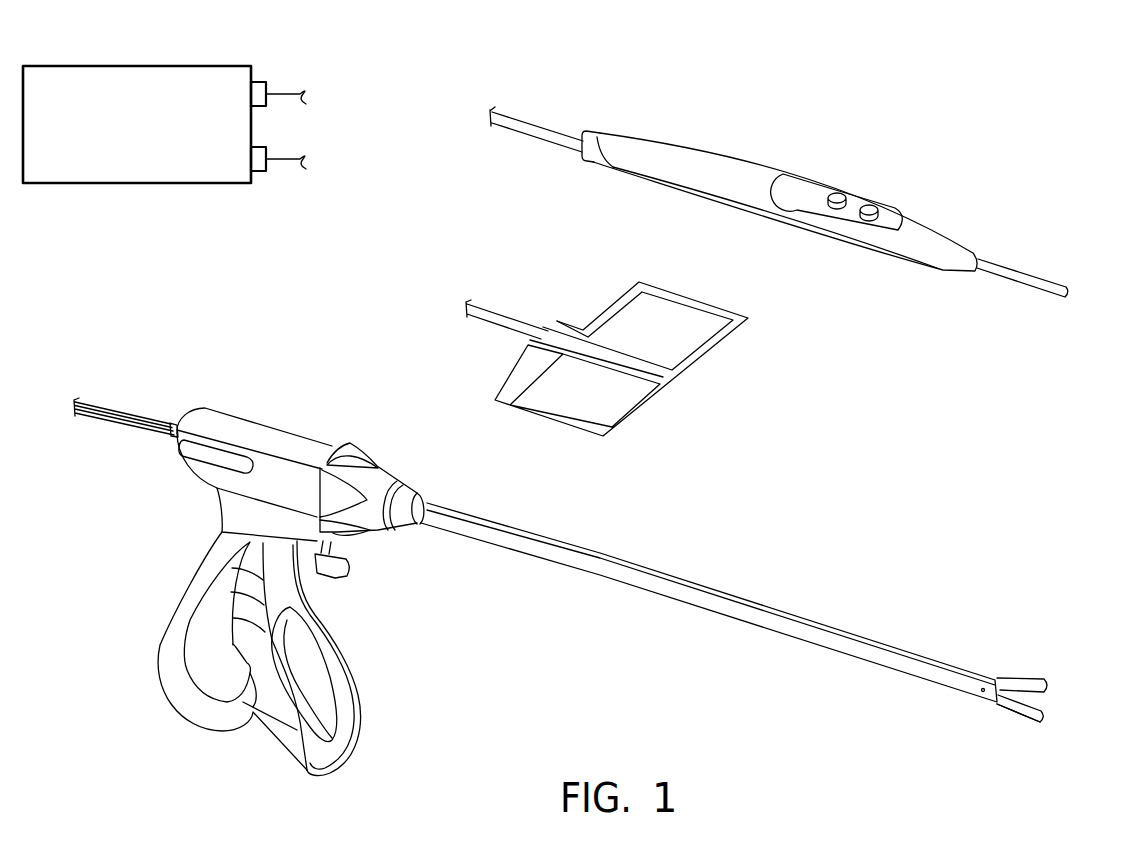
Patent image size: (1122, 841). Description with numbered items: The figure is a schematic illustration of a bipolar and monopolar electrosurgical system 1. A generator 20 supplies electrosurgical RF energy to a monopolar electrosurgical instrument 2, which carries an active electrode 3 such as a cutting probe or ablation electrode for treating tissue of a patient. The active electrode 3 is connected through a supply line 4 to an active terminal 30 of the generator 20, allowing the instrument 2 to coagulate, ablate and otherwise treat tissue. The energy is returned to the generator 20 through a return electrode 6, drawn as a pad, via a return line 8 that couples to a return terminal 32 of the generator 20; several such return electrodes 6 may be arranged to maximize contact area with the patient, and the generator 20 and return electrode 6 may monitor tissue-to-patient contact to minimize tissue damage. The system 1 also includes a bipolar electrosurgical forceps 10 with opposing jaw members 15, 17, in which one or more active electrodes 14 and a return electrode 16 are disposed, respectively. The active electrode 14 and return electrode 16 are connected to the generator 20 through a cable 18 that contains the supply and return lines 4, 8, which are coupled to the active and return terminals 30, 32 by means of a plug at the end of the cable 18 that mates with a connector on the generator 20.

The electrosurgical system 1 is at (571, 245).
The monopolar electrosurgical instrument 2 is at (922, 228).
The active electrode 3 is at (1048, 282).
The supply line 4 is at (539, 120).
The return electrode 6 is at (547, 428).
The return line 8 is at (512, 318).
The bipolar electrosurgical forceps 10 is at (613, 570).
The active electrode 14 is at (1047, 695).
The jaw member 15 is at (1037, 673).
The return electrode 16 is at (1048, 708).
The jaw member 17 is at (1028, 722).
The cable 18 is at (144, 410).
The generator 20 is at (140, 65).
The active terminal 30 is at (257, 80).
The return terminal 32 is at (257, 172).